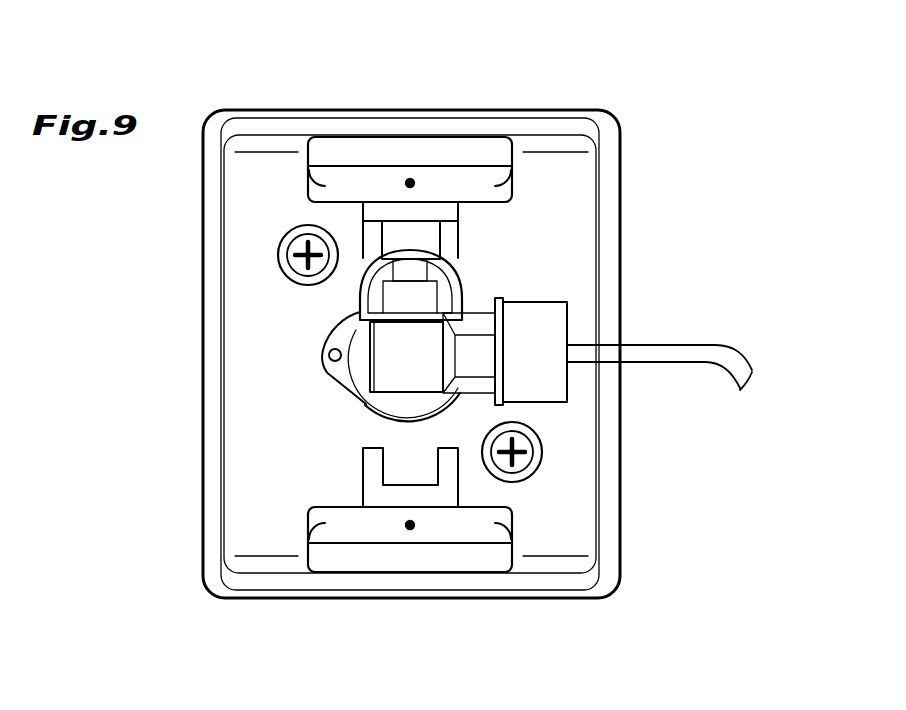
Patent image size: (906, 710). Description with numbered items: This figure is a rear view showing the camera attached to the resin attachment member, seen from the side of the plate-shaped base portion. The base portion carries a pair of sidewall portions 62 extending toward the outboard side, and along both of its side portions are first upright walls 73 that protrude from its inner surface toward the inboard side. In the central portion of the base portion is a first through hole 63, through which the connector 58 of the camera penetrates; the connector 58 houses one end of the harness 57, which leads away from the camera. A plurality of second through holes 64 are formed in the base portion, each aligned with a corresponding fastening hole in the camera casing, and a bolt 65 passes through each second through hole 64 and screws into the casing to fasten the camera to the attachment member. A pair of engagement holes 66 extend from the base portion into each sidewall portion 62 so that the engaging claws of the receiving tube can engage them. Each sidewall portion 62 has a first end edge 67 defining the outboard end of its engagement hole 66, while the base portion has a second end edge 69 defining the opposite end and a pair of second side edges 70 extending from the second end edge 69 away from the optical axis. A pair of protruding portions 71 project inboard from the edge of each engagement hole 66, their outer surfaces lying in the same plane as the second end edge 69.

The harness 57 is at (720, 348).
The connector 58 is at (548, 385).
The sidewall portion 62 is at (528, 148).
The first through hole 63 is at (324, 372).
The second through hole 64 is at (292, 242).
The bolt 65 is at (313, 268).
The engagement hole 66 is at (410, 180).
The first end edge 67 is at (347, 150).
The second end edge 69 is at (470, 190).
The second side edge 70 is at (324, 184).
The protruding portion 71 is at (443, 215).
The first upright wall 73 is at (212, 431).